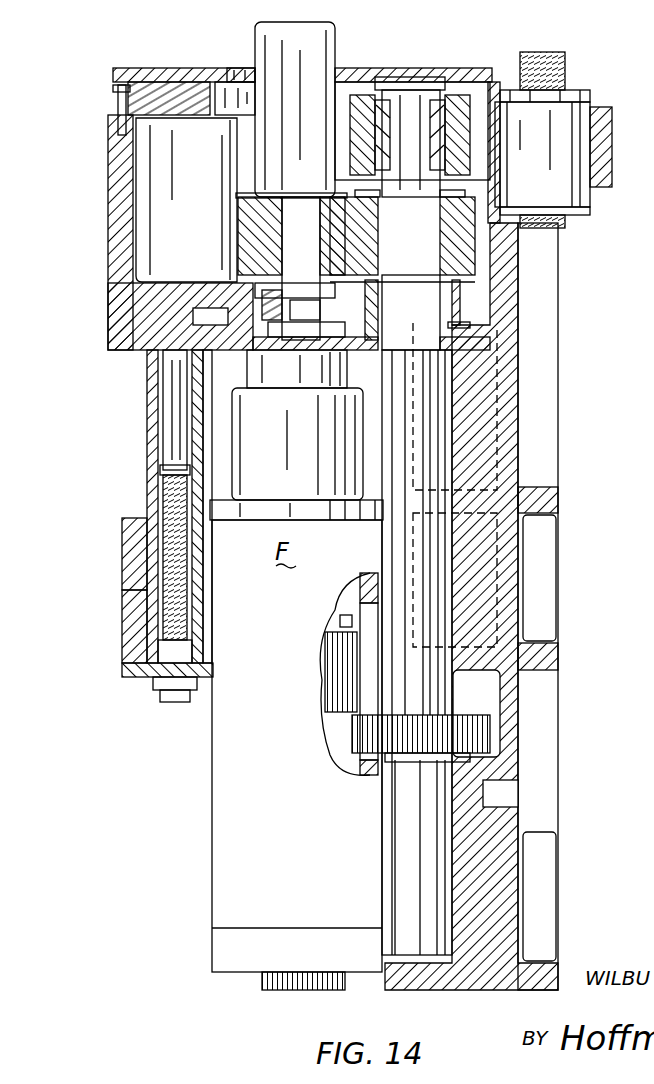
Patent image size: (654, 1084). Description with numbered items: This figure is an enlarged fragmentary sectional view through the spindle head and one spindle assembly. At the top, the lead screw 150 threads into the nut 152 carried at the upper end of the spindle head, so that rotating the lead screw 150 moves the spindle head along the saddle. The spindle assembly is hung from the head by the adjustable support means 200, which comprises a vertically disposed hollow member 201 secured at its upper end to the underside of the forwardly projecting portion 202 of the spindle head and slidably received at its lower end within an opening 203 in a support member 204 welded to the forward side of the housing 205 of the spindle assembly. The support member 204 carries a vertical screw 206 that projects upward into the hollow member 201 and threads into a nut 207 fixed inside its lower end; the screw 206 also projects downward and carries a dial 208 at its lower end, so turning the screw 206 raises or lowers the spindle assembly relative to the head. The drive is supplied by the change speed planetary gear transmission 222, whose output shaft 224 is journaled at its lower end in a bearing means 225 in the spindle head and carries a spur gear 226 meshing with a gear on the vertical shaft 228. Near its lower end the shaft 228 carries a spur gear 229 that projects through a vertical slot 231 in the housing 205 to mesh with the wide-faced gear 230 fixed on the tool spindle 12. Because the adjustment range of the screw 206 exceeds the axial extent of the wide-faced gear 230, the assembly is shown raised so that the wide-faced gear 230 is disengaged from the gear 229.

The tool spindle 12 is at (305, 980).
The lead screw 150 is at (562, 80).
The nut 152 is at (590, 196).
The adjustable support means 200 is at (121, 452).
The hollow member 201 is at (150, 392).
The forwardly projecting portion 202 is at (113, 318).
The opening 203 is at (150, 548).
The support member 204 is at (133, 577).
The housing 205 is at (212, 755).
The screw 206 is at (207, 606).
The nut 207 is at (160, 607).
The dial 208 is at (152, 686).
The change speed planetary gear transmission 222 is at (458, 245).
The output shaft 224 is at (257, 45).
The bearing means 225 is at (258, 306).
The spur gear 226 is at (240, 222).
The shaft 228 is at (433, 458).
The spur gear 229 is at (362, 740).
The wide-faced gear 230 is at (345, 662).
The slot 231 is at (368, 626).